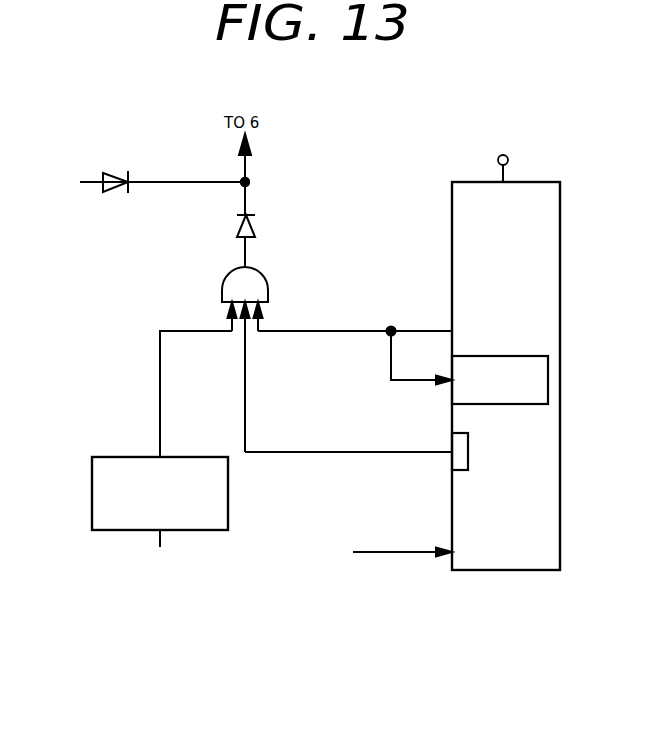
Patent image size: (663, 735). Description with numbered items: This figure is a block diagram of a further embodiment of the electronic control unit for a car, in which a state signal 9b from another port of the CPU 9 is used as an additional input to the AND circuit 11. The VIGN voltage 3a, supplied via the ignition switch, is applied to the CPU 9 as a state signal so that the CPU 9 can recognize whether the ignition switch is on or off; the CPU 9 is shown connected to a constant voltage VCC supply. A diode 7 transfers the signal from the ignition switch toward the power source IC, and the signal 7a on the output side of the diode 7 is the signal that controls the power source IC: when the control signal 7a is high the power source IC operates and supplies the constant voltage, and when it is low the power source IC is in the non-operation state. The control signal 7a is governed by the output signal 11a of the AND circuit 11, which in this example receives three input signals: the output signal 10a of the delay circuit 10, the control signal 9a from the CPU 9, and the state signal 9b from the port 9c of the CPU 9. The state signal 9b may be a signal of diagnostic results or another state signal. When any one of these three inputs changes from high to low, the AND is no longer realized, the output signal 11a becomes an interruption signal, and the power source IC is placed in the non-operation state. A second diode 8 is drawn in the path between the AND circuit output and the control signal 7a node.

The diode 7 is at (109, 174).
The control signal 7a is at (251, 178).
The diode 8 is at (257, 226).
The output signal of the AND circuit 11a is at (247, 256).
The AND circuit 11 is at (270, 292).
The output signal of the delay circuit 10a is at (187, 331).
The control signal 9a is at (337, 330).
The CPU 9 is at (538, 185).
The state signal 9b is at (337, 450).
The port 9c is at (470, 453).
The VIGN voltage 3a is at (382, 550).
The delay circuit 10 is at (92, 498).